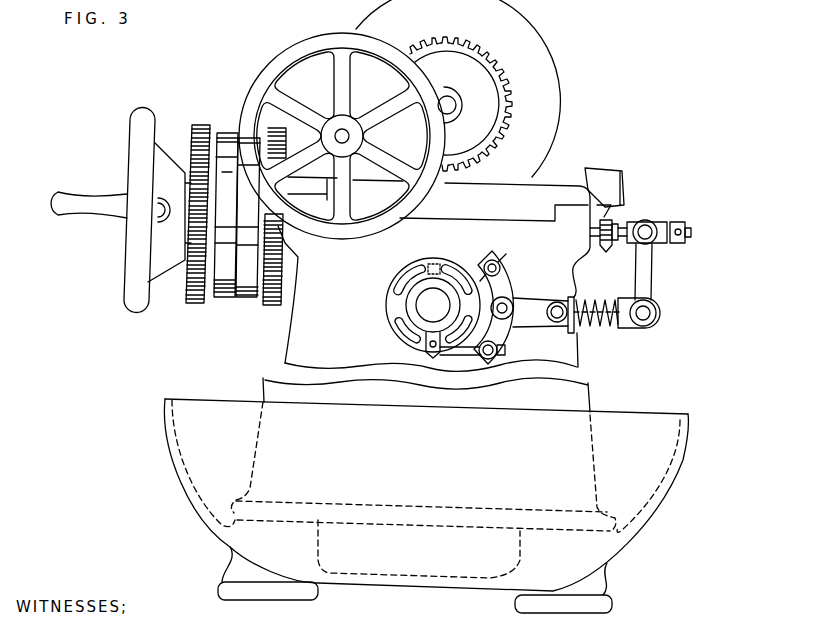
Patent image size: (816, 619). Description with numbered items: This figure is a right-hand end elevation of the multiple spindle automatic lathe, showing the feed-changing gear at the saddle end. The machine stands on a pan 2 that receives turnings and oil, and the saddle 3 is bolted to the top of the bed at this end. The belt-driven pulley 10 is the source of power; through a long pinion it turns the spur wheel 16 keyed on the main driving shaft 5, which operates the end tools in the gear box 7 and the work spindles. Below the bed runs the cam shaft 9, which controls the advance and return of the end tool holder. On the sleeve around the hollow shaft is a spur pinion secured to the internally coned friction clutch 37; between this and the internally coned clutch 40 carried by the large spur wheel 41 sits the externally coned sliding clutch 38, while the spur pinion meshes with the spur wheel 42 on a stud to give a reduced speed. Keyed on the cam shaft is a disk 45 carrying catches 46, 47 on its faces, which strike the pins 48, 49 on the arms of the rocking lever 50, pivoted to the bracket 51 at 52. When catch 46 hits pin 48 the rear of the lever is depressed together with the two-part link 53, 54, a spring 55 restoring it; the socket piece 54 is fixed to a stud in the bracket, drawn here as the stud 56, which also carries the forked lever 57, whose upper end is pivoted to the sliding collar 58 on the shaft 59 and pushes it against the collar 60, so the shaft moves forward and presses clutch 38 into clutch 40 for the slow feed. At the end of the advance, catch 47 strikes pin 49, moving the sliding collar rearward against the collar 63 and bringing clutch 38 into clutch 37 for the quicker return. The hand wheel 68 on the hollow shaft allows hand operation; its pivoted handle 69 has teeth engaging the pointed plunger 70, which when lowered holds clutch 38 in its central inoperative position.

The pan 2 is at (222, 437).
The saddle 3 is at (522, 203).
The driving shaft 5 is at (451, 106).
The gear box 7 is at (503, 11).
The cam shaft 9 is at (432, 307).
The pulley 10 is at (313, 43).
The spur wheel 16 is at (497, 77).
The internally coned friction clutch 37 is at (249, 300).
The externally coned clutch 38 is at (233, 300).
The internally coned clutch 40 is at (218, 299).
The spur wheel 41 is at (191, 305).
The spur wheel 42 is at (270, 306).
The disk 45 is at (396, 300).
The catch 46 is at (435, 263).
The catch 47 is at (437, 351).
The pin 48 is at (476, 278).
The pin 49 is at (492, 360).
The rocking lever 50 is at (508, 281).
The bracket 51 is at (583, 303).
The pivot 52 is at (516, 301).
The link 53 is at (557, 323).
The socket piece 54 is at (612, 328).
The spring 55 is at (598, 329).
The pivot block 56 is at (652, 320).
The forked lever 57 is at (651, 283).
The sliding collar 58 is at (656, 227).
The shaft 59 is at (682, 222).
The collar 60 is at (614, 224).
The collar 63 is at (684, 244).
The hand wheel 68 is at (137, 283).
The handle 69 is at (84, 208).
The pointed plunger 70 is at (159, 200).